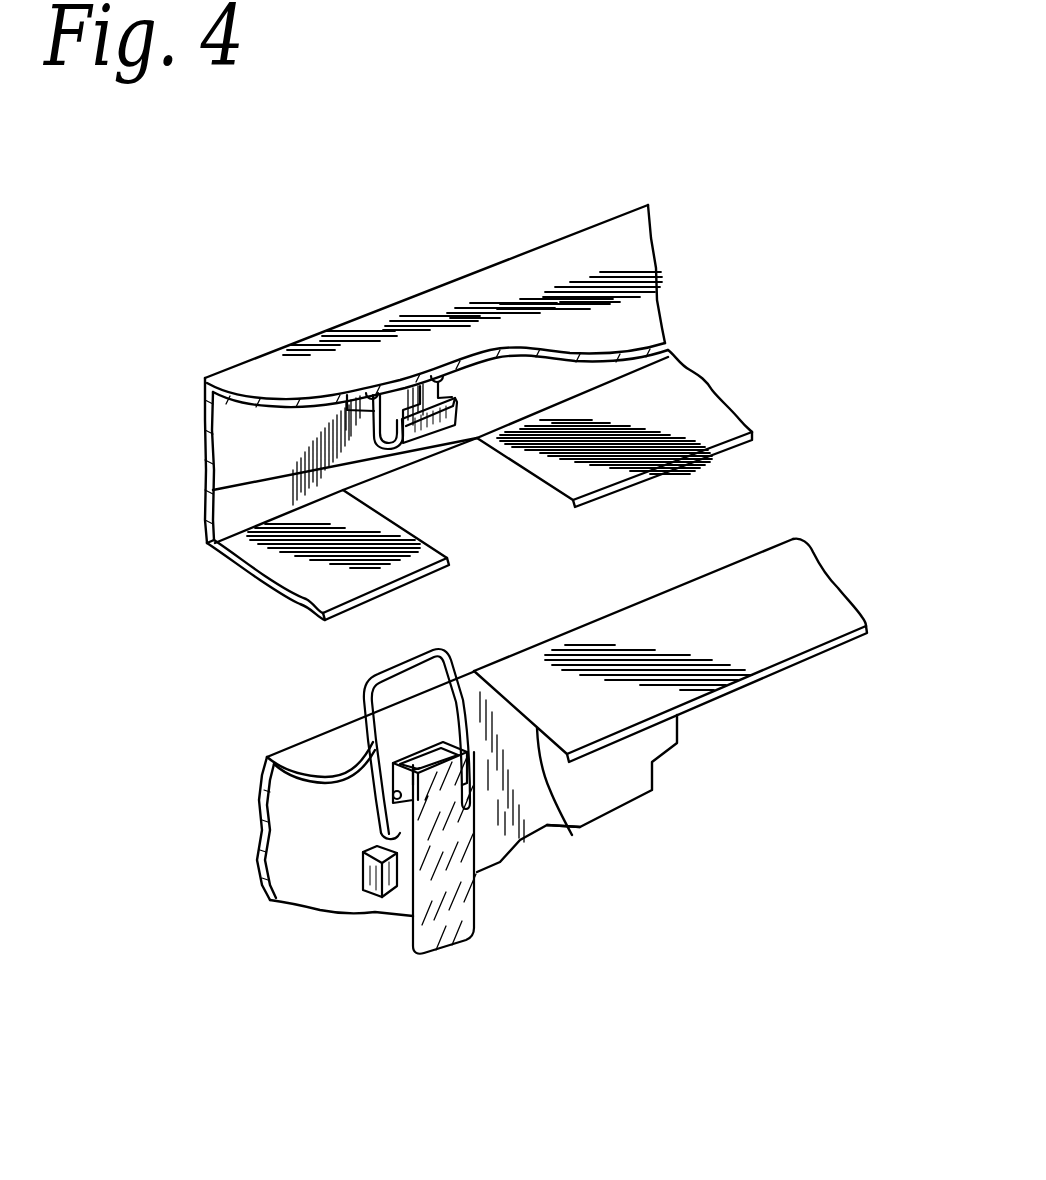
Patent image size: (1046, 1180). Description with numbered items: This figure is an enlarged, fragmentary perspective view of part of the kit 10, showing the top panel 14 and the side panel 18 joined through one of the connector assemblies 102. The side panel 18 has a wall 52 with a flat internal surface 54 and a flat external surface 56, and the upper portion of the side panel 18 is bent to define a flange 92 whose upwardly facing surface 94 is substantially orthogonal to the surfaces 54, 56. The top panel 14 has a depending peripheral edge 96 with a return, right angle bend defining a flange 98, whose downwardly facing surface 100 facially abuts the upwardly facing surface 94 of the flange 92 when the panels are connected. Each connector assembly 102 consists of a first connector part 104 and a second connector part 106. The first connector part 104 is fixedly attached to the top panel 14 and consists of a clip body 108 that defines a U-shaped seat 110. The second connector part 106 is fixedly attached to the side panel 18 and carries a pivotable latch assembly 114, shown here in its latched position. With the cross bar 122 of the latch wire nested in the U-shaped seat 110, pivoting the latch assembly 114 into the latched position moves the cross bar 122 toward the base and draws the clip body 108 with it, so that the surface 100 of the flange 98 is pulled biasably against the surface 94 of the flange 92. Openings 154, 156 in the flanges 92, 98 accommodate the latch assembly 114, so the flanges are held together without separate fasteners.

The kit 10 is at (708, 292).
The top panel 14 is at (594, 274).
The side panel 18 is at (635, 788).
The wall 52 is at (303, 870).
The internal surface 54 is at (287, 837).
The external surface 56 is at (257, 792).
The flange 92 is at (800, 640).
The upwardly facing surface 94 is at (763, 570).
The peripheral edge 96 is at (237, 445).
The flange 98 is at (560, 475).
The downwardly facing surface 100 is at (618, 490).
The connector assembly 102 is at (460, 392).
The first connector part 104 is at (430, 380).
The second connector part 106 is at (400, 895).
The clip body 108 is at (390, 410).
The U-shaped seat 110 is at (210, 491).
The latch assembly 114 is at (372, 836).
The cross bar 122 is at (390, 670).
The opening 154 is at (572, 835).
The opening 156 is at (503, 467).